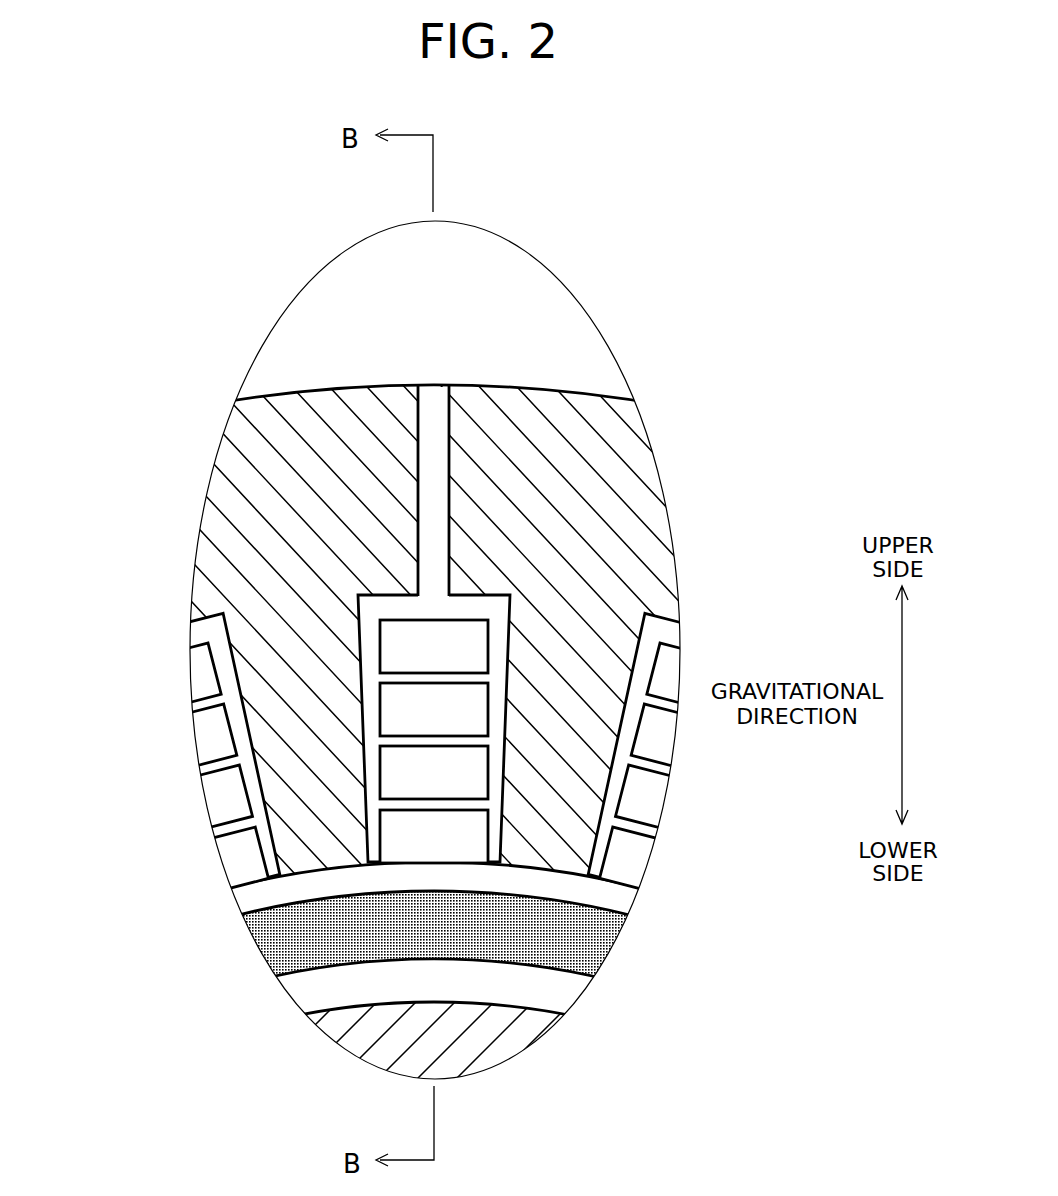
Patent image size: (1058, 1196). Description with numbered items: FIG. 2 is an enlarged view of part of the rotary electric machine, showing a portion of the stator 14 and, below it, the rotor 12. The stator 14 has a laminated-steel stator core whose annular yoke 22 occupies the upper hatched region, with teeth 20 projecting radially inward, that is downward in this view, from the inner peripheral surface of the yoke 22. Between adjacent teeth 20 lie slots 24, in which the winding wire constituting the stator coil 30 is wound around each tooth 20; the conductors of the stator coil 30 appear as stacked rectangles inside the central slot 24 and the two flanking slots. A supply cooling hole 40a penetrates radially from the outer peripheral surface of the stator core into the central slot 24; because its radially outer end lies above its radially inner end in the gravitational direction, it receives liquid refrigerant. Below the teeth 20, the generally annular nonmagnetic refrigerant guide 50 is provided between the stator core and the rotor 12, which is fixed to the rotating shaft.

The rotor 12 is at (337, 1030).
The stator 14 is at (317, 335).
The teeth 20 is at (577, 830).
The yoke 22 is at (597, 430).
The slot 24 is at (473, 607).
The stator coil 30 is at (395, 647).
The supply cooling hole 40a is at (437, 402).
The refrigerant guide 50 is at (592, 930).